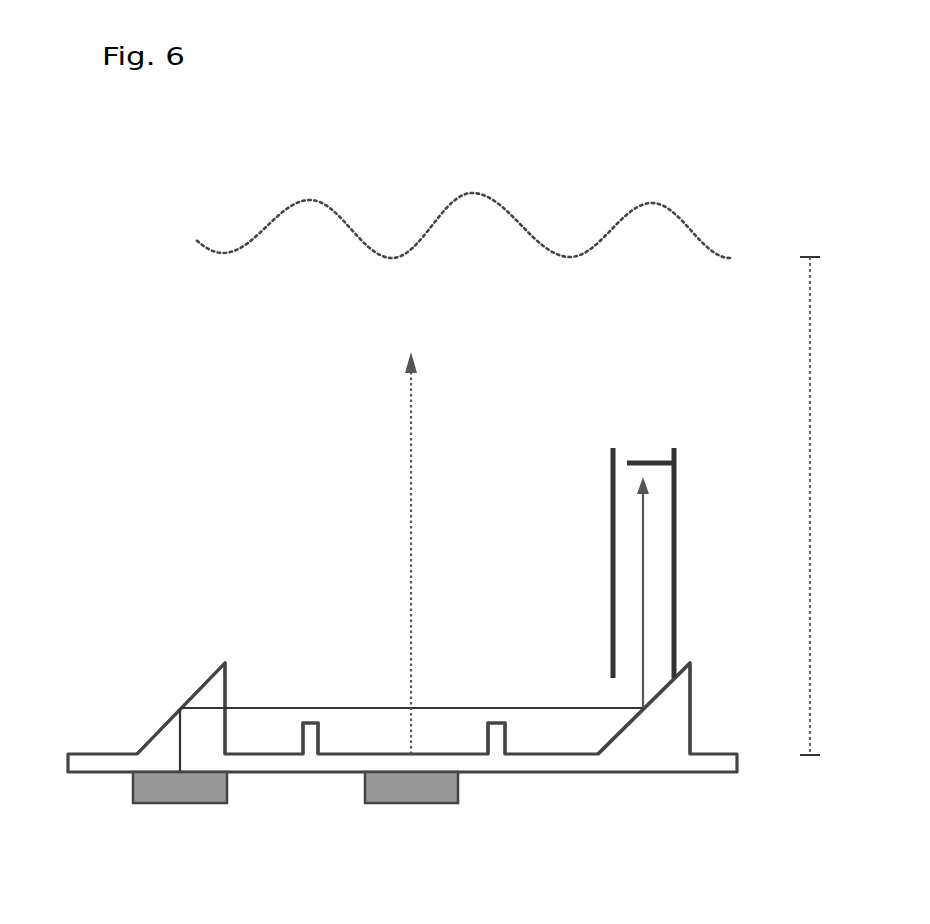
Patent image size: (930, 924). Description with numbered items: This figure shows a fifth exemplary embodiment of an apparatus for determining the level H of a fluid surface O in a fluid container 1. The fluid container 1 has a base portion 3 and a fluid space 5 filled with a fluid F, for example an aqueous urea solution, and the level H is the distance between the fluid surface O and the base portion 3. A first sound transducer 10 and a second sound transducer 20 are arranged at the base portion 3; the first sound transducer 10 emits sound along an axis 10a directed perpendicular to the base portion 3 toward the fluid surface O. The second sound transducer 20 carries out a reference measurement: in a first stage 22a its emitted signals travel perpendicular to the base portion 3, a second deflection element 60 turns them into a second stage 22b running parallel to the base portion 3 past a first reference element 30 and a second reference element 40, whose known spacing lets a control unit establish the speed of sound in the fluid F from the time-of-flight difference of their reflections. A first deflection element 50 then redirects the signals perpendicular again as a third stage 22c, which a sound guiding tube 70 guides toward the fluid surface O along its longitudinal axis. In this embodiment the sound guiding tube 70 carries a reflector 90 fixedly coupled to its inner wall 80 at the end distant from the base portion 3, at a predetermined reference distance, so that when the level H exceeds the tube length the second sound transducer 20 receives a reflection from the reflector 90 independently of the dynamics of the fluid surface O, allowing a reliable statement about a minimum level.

The fluid container 1 is at (96, 398).
The base portion 3 is at (698, 772).
The fluid space 5 is at (421, 160).
The first sound transducer 10 is at (368, 797).
The acoustic axis 10a is at (409, 601).
The second sound transducer 20 is at (135, 778).
The first stage of the emitted second sound signals 22a is at (178, 732).
The second stage of the emitted second sound signals 22b is at (557, 708).
The third stage of the emitted second sound signals 22c is at (642, 575).
The first reference element 30 is at (303, 727).
The second reference element 40 is at (505, 727).
The first deflection element 50 is at (667, 690).
The second deflection element 60 is at (212, 673).
The sound guiding tube 70 is at (611, 480).
The inner wall 80 is at (660, 636).
The reflector 90 is at (657, 461).
The fluid surface O is at (598, 248).
The fluid F is at (366, 331).
The level H is at (809, 470).